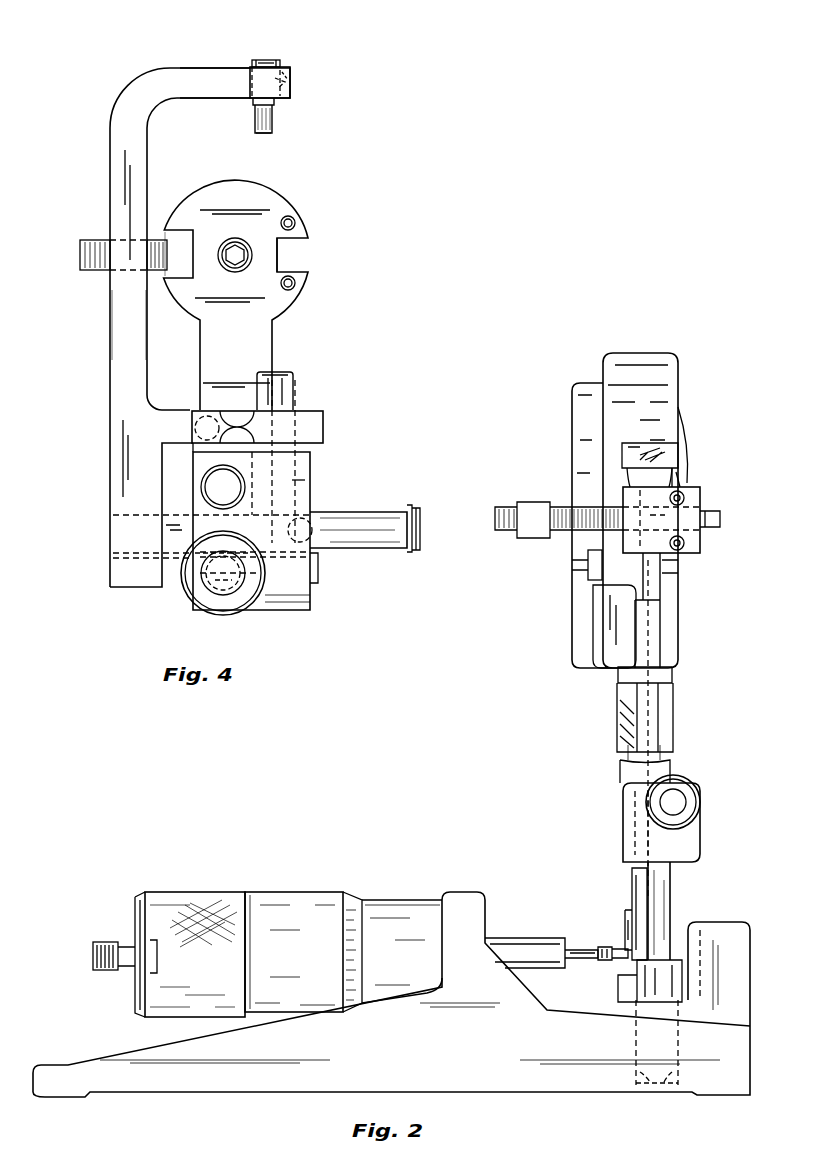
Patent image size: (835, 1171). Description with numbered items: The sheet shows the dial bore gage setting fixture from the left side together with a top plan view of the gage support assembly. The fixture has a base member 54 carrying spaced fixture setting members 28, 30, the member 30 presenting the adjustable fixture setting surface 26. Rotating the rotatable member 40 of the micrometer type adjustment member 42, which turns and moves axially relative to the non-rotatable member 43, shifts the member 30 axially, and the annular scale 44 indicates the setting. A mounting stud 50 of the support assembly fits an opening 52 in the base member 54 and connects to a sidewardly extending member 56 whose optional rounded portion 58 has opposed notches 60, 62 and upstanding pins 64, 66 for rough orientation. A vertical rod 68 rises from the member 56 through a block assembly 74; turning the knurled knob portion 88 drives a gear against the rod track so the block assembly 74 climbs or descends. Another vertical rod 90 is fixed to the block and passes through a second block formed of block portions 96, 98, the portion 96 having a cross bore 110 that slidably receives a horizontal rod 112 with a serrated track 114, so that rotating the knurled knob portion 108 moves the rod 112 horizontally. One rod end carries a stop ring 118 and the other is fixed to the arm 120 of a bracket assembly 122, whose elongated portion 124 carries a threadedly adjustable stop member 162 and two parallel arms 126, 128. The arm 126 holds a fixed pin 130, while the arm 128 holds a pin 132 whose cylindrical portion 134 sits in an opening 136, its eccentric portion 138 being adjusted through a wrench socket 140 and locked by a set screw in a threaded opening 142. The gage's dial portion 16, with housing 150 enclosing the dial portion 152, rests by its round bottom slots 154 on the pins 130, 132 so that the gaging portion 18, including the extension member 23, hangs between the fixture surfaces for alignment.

In FIG. 2, the dial portion 16 is at (694, 436).
In FIG. 2, the gaging portion 18 is at (625, 915).
In FIG. 2, the extension member 23 is at (606, 946).
In FIG. 2, the fixture setting surface 26 is at (603, 970).
In FIG. 2, the fixture setting member 28 is at (700, 957).
In FIG. 2, the fixture setting member 30 is at (582, 948).
In FIG. 2, the rotatable member 40 is at (178, 912).
In FIG. 2, the micrometer type adjustment member 42 is at (296, 891).
In FIG. 2, the non-rotatable member 43 is at (405, 927).
In FIG. 2, the annular scale 44 is at (358, 897).
In FIG. 2, the mounting stud 50 is at (668, 1095).
In FIG. 2, the opening 52 is at (650, 1095).
In FIG. 2, the base member 54 is at (732, 1057).
In FIG. 4, the sidewardly extending member 56 is at (272, 324).
In FIG. 4, the rounded portion 58 is at (260, 200).
In FIG. 4, the notch 60 is at (283, 273).
In FIG. 4, the notch 62 is at (168, 236).
In FIG. 4, the pin 64 is at (297, 287).
In FIG. 4, the pin 66 is at (297, 222).
In FIG. 2, the vertical rod 68 is at (660, 888).
In FIG. 2, the block assembly 74 is at (705, 821).
In FIG. 2, the knurled knob portion 88 is at (690, 790).
In FIG. 2, the vertical rod 90 is at (655, 623).
In FIG. 4, the block portion 96 is at (300, 463).
In FIG. 4, the block portion 98 is at (305, 597).
In FIG. 4, the knurled knob portion 108 is at (225, 605).
In FIG. 2, the knurled knob portion 108 is at (630, 450).
In FIG. 4, the cross bore 110 is at (320, 518).
In FIG. 4, the horizontal rod 112 is at (370, 532).
In FIG. 4, the serrated track 114 is at (368, 550).
In FIG. 4, the stop ring 118 is at (410, 510).
In FIG. 4, the arm 120 is at (141, 575).
In FIG. 4, the bracket assembly 122 is at (106, 383).
In FIG. 4, the elongated portion 124 is at (125, 322).
In FIG. 4, the arm 126 is at (315, 427).
In FIG. 4, the arm 128 is at (163, 83).
In FIG. 4, the pin 130 is at (265, 398).
In FIG. 2, the pin 130 is at (700, 503).
In FIG. 4, the pin 132 is at (282, 103).
In FIG. 4, the cylindrical portion 134 is at (278, 62).
In FIG. 4, the opening 136 is at (294, 87).
In FIG. 4, the eccentric portion 138 is at (264, 133).
In FIG. 4, the wrench socket 140 is at (262, 57).
In FIG. 4, the threaded opening 142 is at (302, 80).
In FIG. 2, the housing 150 is at (580, 620).
In FIG. 2, the dial portion 152 is at (688, 478).
In FIG. 2, the round bottom slot 154 is at (622, 505).
In FIG. 4, the stop member 162 is at (82, 262).